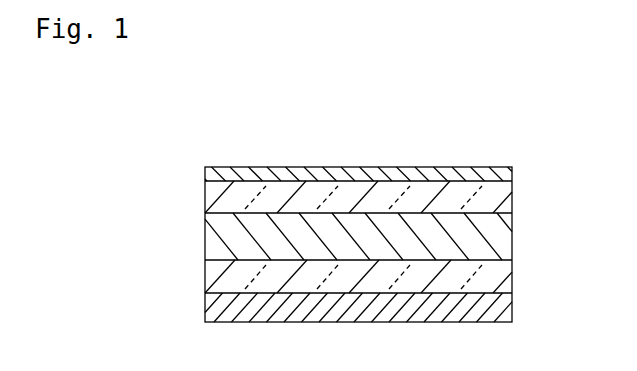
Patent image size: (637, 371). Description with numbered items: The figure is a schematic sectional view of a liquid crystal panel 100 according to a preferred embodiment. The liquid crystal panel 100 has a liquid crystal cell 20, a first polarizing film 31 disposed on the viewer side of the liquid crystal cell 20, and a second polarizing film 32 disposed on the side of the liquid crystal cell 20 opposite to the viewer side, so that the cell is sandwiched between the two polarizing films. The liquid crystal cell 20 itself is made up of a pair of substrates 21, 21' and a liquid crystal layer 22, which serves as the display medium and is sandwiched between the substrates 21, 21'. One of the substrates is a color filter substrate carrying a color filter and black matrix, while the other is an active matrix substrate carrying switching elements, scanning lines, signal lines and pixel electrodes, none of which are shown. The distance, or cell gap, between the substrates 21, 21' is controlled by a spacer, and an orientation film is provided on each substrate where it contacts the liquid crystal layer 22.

The liquid crystal panel 100 is at (506, 117).
The first polarizing film 31 is at (512, 172).
The liquid crystal cell 20 is at (522, 183).
The substrate 21 is at (320, 192).
The liquid crystal layer 22 is at (205, 243).
The substrate 21' is at (320, 281).
The second polarizing film 32 is at (512, 310).